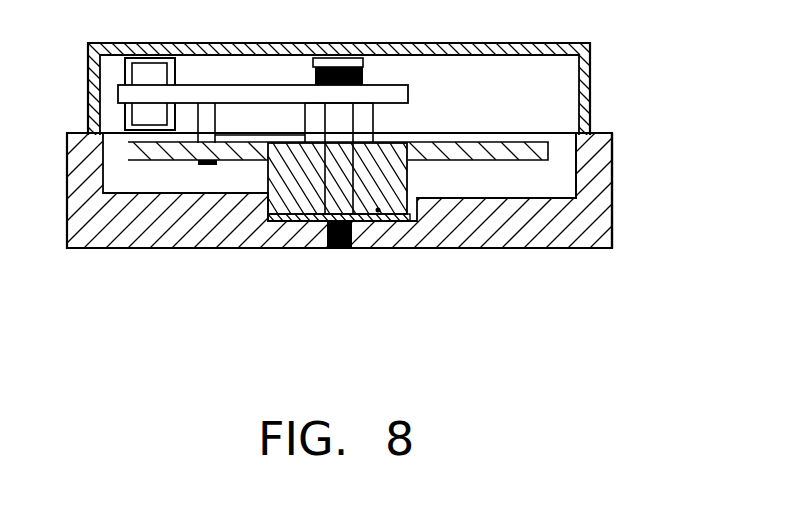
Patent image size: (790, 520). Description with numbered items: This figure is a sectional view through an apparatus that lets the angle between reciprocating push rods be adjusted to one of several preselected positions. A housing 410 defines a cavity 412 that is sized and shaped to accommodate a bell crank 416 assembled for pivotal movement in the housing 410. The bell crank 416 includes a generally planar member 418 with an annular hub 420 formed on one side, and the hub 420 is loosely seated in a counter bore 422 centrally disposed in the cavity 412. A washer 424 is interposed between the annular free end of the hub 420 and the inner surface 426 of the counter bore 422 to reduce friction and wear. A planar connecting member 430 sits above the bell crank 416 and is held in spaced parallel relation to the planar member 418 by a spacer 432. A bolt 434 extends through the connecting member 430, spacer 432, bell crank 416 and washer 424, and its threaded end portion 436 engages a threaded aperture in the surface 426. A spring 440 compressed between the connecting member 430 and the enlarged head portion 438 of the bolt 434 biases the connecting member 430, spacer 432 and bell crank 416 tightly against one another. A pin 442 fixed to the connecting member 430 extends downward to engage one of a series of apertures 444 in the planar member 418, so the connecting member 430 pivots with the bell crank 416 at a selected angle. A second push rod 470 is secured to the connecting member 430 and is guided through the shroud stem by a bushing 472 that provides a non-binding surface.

The housing 410 is at (160, 235).
The cavity 412 is at (527, 187).
The bell crank 416 is at (392, 168).
The planar member 418 is at (547, 160).
The annular hub 420 is at (282, 216).
The counter bore 422 is at (440, 224).
The washer 424 is at (376, 215).
The inner surface 426 is at (385, 220).
The connecting member 430 is at (393, 97).
The spacer 432 is at (353, 130).
The bolt 434 is at (332, 113).
The threaded end portion 436 is at (345, 253).
The enlarged head portion 438 is at (357, 62).
The spring 440 is at (318, 82).
The pin 442 is at (208, 119).
The apertures 444 is at (170, 162).
The second push rod 470 is at (153, 72).
The bushing 472 is at (135, 48).